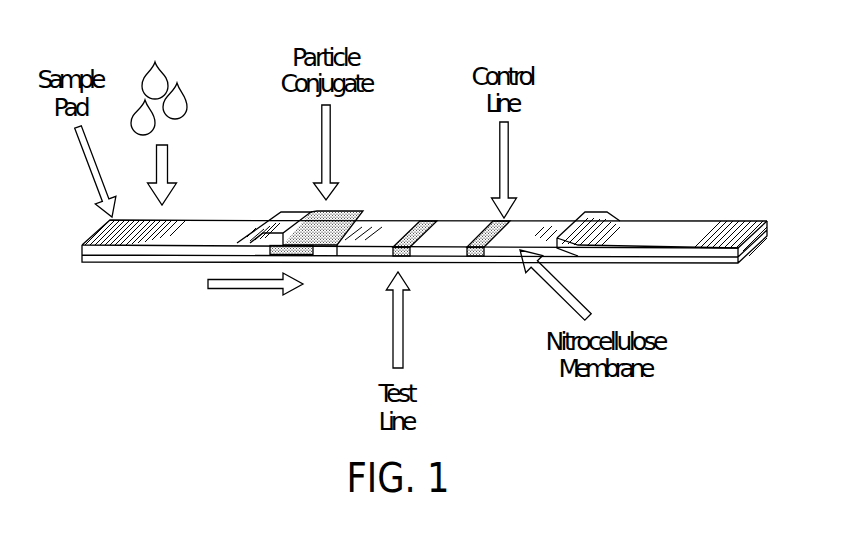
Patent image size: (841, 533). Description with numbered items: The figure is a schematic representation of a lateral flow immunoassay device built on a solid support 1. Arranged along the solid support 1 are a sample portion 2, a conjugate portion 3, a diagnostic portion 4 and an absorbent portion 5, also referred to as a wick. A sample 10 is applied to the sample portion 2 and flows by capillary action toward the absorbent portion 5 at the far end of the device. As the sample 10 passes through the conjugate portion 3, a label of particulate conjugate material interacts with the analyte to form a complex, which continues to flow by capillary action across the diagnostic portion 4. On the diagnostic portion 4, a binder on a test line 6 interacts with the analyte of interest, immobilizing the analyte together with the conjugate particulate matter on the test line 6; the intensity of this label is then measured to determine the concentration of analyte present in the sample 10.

The solid support 1 is at (145, 263).
The sample portion 2 is at (110, 222).
The conjugate portion 3 is at (350, 217).
The diagnostic portion 4 is at (455, 232).
The absorbent portion 5 is at (669, 229).
The test line 6 is at (423, 225).
The sample 10 is at (167, 73).